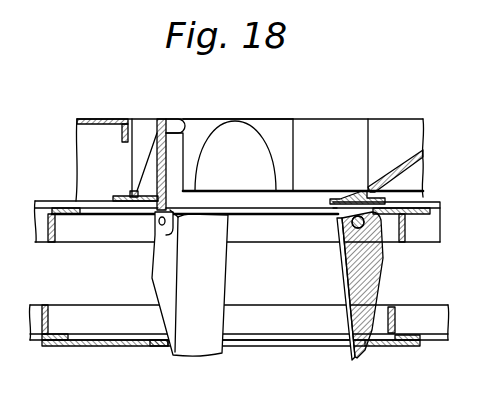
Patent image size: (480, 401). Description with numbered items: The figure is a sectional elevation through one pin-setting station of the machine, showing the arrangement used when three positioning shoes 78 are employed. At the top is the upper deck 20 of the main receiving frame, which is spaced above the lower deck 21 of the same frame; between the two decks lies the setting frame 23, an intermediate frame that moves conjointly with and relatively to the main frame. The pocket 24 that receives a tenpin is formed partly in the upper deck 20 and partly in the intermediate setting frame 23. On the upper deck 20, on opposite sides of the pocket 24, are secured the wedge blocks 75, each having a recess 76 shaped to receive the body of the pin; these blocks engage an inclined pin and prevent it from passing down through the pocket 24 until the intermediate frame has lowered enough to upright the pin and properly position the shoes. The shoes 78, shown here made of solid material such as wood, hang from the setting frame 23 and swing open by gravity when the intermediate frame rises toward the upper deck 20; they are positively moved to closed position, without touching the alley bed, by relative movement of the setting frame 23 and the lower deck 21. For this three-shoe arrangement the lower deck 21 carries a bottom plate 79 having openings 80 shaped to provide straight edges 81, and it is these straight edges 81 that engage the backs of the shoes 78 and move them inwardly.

The upper deck 20 is at (385, 118).
The lower deck 21 is at (427, 315).
The setting frame 23 is at (435, 222).
The pocket 24 is at (300, 182).
The wedge block 75 is at (273, 125).
The recess 76 is at (227, 135).
The positioning shoe 78 is at (217, 268).
The bottom plate 79 is at (110, 347).
The opening 80 is at (298, 343).
The straight edge 81 is at (161, 350).